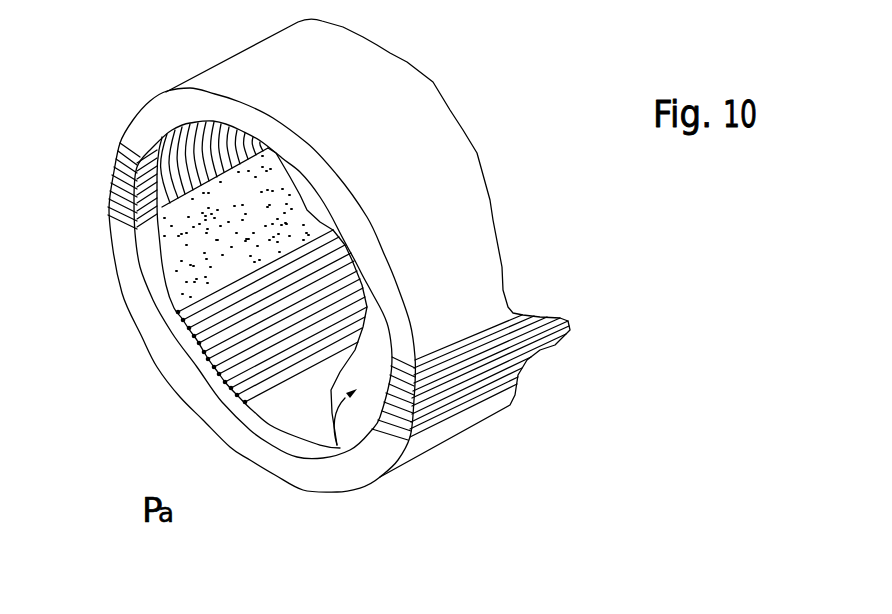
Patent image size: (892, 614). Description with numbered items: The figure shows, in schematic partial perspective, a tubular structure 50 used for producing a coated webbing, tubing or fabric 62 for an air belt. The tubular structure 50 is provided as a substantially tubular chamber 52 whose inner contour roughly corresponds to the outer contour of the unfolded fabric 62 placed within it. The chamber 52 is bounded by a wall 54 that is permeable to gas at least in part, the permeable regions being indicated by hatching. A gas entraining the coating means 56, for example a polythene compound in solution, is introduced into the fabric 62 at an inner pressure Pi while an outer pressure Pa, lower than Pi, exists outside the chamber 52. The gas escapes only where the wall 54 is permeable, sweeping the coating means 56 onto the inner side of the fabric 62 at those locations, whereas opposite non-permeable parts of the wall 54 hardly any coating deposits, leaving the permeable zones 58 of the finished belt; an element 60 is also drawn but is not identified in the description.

The tubular structure 50 is at (620, 355).
The tubular chamber 52 is at (337, 445).
The wall 54 is at (458, 383).
The coating means 56 is at (183, 190).
The permeable zones 58 is at (187, 288).
The seam line 60 is at (277, 388).
The coated webbing, tubing or fabric 62 is at (302, 427).